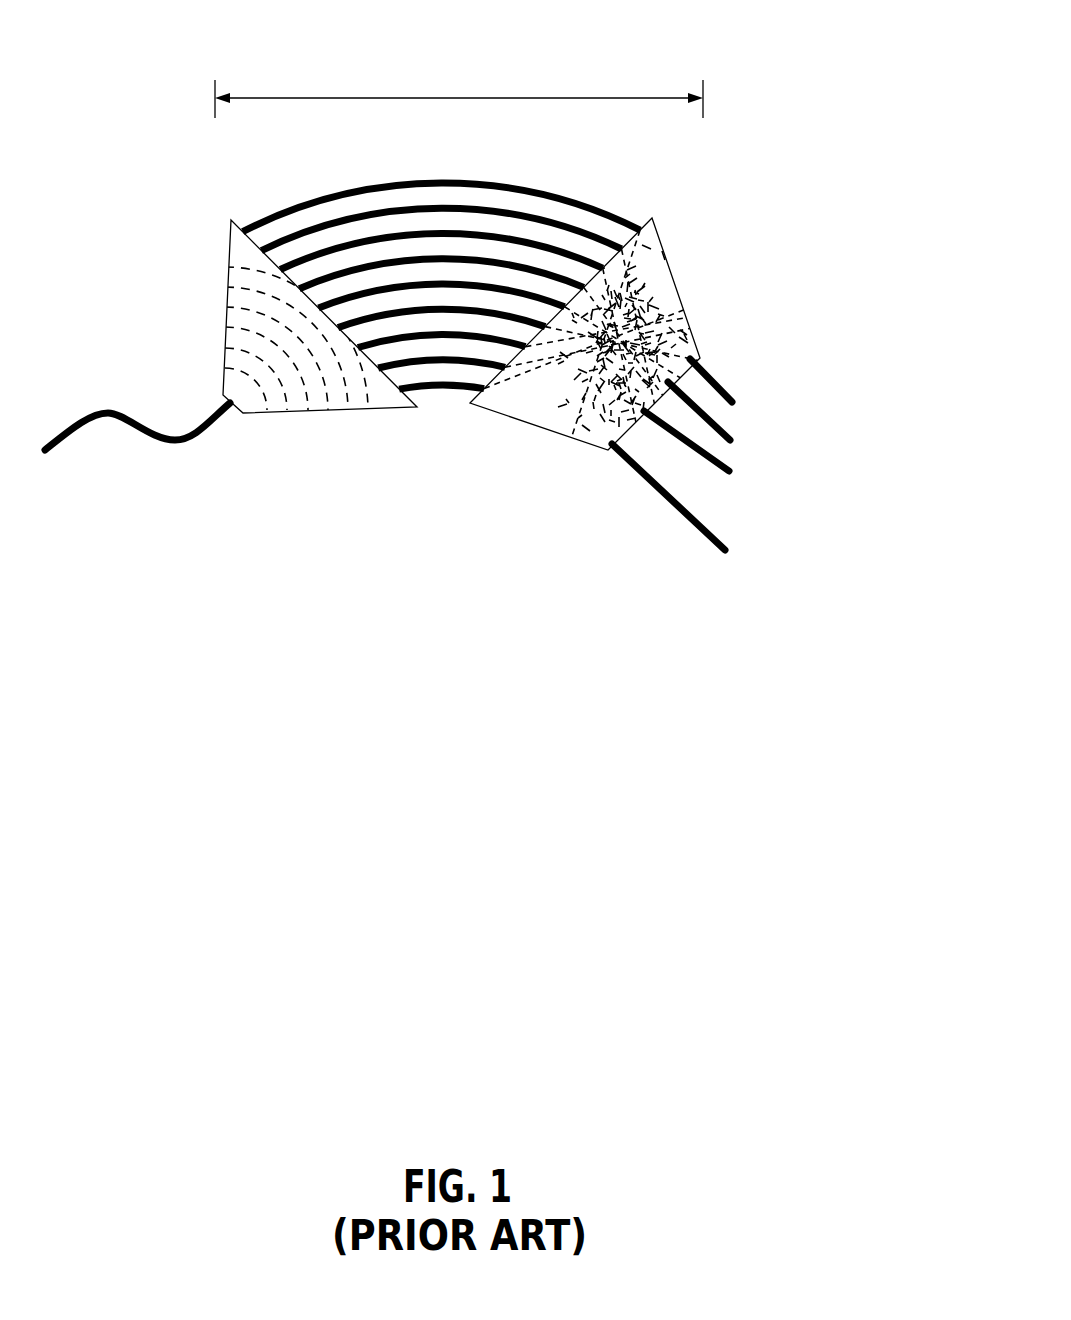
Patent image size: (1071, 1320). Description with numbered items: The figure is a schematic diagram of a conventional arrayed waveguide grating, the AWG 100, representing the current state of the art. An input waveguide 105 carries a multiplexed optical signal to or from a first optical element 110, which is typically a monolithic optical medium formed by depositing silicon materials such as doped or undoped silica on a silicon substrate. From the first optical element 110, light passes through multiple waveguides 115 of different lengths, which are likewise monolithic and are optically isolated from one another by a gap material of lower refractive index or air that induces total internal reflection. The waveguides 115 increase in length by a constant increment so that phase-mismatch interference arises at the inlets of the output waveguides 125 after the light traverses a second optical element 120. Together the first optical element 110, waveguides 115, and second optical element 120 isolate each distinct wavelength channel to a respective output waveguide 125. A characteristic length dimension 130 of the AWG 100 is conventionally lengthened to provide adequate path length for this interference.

The AWG 100 is at (847, 65).
The input waveguide 105 is at (91, 410).
The first optical element 110 is at (229, 256).
The waveguides 115 is at (430, 255).
The second optical element 120 is at (677, 289).
The output waveguides 125 is at (723, 392).
The characteristic length dimension 130 is at (453, 93).